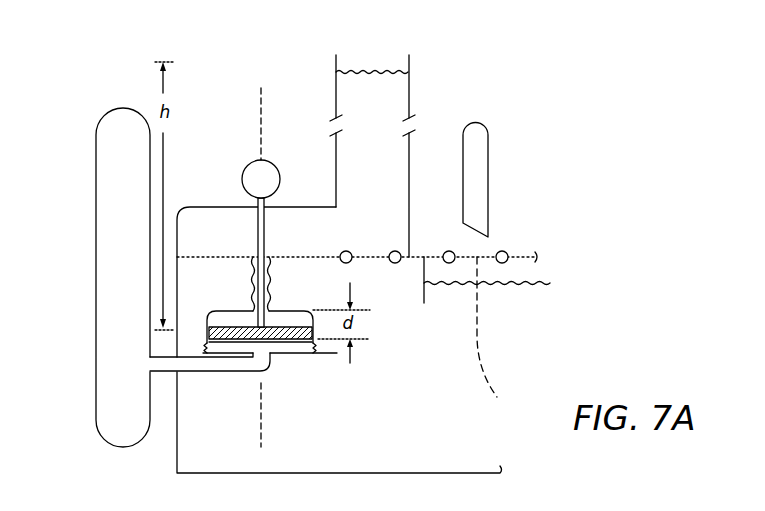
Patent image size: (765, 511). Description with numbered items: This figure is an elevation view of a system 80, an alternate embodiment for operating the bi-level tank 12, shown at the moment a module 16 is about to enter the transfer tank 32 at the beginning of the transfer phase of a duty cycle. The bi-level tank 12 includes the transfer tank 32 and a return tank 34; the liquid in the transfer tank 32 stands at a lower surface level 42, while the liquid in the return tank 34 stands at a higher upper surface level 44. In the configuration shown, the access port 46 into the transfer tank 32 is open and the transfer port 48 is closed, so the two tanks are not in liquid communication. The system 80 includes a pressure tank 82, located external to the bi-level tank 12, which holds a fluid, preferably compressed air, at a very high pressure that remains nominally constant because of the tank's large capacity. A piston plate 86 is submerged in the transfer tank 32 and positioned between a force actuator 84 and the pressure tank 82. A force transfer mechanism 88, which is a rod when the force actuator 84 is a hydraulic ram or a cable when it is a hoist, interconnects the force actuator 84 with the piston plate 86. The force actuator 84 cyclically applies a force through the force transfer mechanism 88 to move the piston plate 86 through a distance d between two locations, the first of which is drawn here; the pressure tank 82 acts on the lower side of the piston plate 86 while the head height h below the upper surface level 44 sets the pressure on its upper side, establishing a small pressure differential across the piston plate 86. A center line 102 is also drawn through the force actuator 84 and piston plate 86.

The bi-level tank 12 is at (175, 470).
The module 16 is at (493, 183).
The transfer tank 32 is at (373, 419).
The return tank 34 is at (360, 189).
The lower surface level 42 is at (550, 280).
The upper surface level 44 is at (375, 72).
The access port 46 is at (465, 255).
The transfer port 48 is at (375, 257).
The system 80 is at (599, 140).
The pressure tank 82 is at (95, 215).
The force actuator 84 is at (247, 167).
The piston plate 86 is at (291, 340).
The force transfer mechanism 88 is at (257, 225).
The center line 102 is at (261, 102).